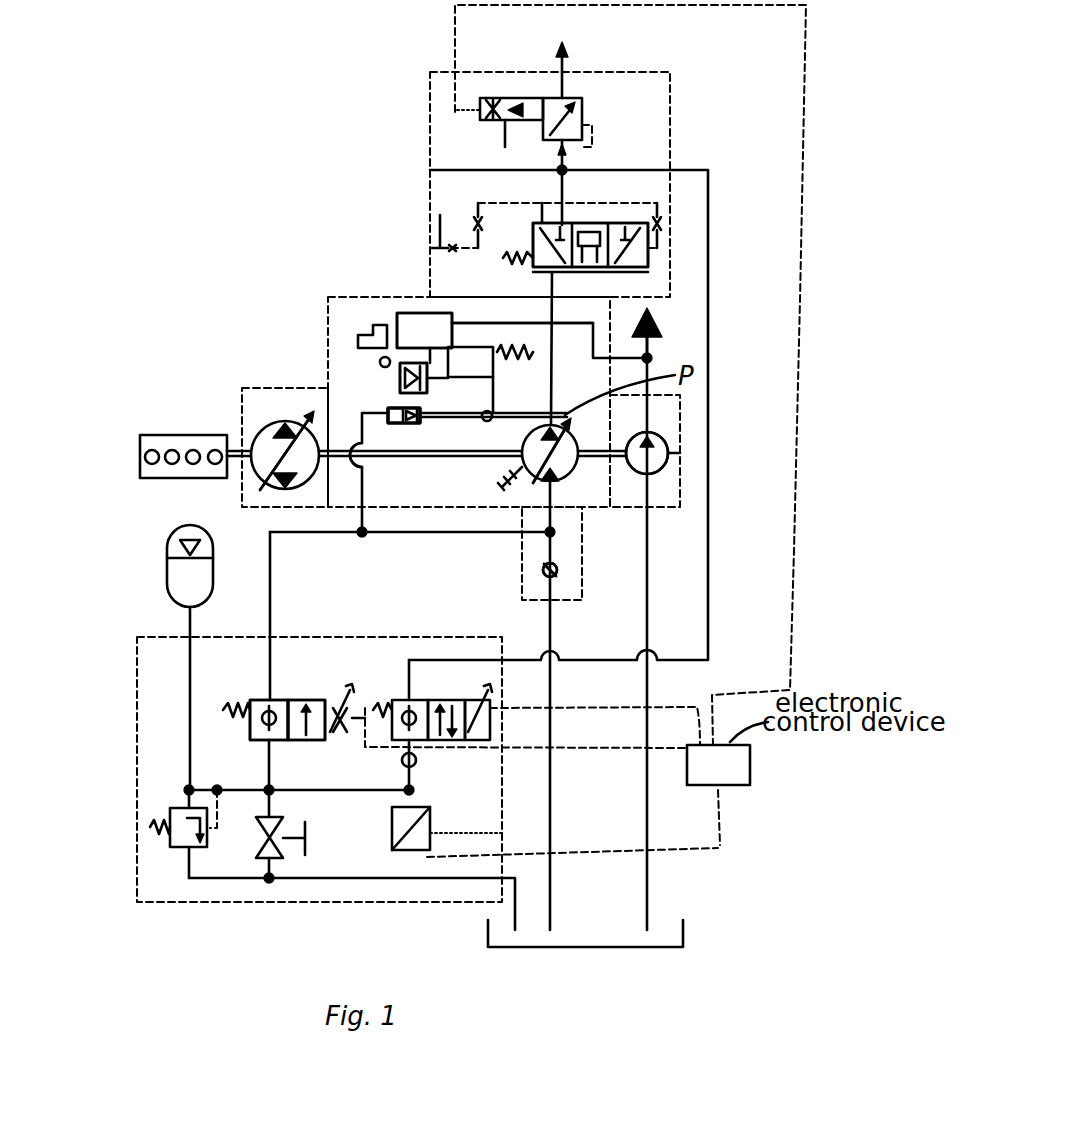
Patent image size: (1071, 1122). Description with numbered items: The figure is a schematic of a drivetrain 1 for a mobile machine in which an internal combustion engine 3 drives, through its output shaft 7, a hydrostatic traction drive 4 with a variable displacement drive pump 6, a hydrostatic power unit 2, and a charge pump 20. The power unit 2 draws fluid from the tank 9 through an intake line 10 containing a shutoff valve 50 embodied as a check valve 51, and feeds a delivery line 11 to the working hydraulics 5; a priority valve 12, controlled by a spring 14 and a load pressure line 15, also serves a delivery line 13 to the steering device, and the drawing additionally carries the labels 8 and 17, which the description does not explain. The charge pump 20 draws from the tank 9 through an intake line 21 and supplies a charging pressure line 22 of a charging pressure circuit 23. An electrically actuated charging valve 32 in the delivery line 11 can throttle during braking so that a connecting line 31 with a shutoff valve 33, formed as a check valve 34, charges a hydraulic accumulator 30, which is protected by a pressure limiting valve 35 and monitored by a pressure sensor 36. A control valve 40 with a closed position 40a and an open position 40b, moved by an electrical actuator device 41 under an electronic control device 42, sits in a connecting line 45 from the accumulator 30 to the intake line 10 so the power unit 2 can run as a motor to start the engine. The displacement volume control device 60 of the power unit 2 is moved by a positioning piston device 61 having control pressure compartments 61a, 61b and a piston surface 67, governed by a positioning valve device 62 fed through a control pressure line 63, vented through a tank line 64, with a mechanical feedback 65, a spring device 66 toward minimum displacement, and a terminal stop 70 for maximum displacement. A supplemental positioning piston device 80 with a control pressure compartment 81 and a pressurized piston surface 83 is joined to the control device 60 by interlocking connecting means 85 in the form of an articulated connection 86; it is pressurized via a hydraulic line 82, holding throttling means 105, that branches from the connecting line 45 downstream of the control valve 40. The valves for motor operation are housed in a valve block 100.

The drivetrain 1 is at (211, 100).
The hydrostatic power unit 2 is at (566, 463).
The internal combustion engine 3 is at (153, 433).
The traction drive 4 is at (267, 398).
The working hydraulics 5 is at (567, 46).
The drive pump 6 is at (268, 443).
The output shaft 7 is at (226, 446).
The swash plate 8 is at (557, 487).
The tank 9 is at (583, 950).
The intake line 10 is at (553, 878).
The delivery line 11 is at (332, 335).
The priority valve 12 is at (650, 255).
The delivery line 13 is at (457, 167).
The spring 14 is at (564, 244).
The load pressure line 15 is at (544, 216).
The connecting line 17 is at (563, 193).
The charge pump 20 is at (672, 455).
The intake line 21 is at (652, 870).
The charging pressure line 22 is at (652, 345).
The charging pressure circuit 23 is at (660, 320).
The hydraulic accumulator 30 is at (172, 577).
The connecting line 31 is at (712, 655).
The charging valve 32 is at (567, 115).
The shutoff valve 33 is at (446, 746).
The check valve 34 is at (416, 767).
The pressure limiting valve 35 is at (182, 850).
The pressure sensor 36 is at (409, 850).
The control valve 40 is at (292, 688).
The closed position 40a is at (252, 735).
The open position 40b is at (317, 740).
The electrical actuator device 41 is at (353, 670).
The electronic control device 42 is at (588, 801).
The connecting line 45 is at (267, 588).
The shutoff valve 50 is at (558, 578).
The check valve 51 is at (558, 578).
The displacement volume control device 60 is at (640, 418).
The positioning piston device 61 is at (428, 355).
The control pressure compartment 61a is at (400, 387).
The control pressure compartment 61b is at (450, 386).
The positioning valve device 62 is at (405, 318).
The control pressure line 63 is at (452, 313).
The tank line 64 is at (380, 325).
The mechanical feedback 65 is at (495, 392).
The spring device 66 is at (570, 322).
The piston surface 67 is at (397, 392).
The terminal stop 70 is at (497, 486).
The supplemental positioning piston device 80 is at (397, 423).
The control pressure compartment 81 is at (392, 423).
The hydraulic line 82 is at (358, 487).
The pressurized piston surface 83 is at (402, 423).
The interlocking connecting means 85 is at (477, 430).
The articulated connection 86 is at (448, 430).
The valve block 100 is at (250, 900).
The throttling means 105 is at (350, 425).